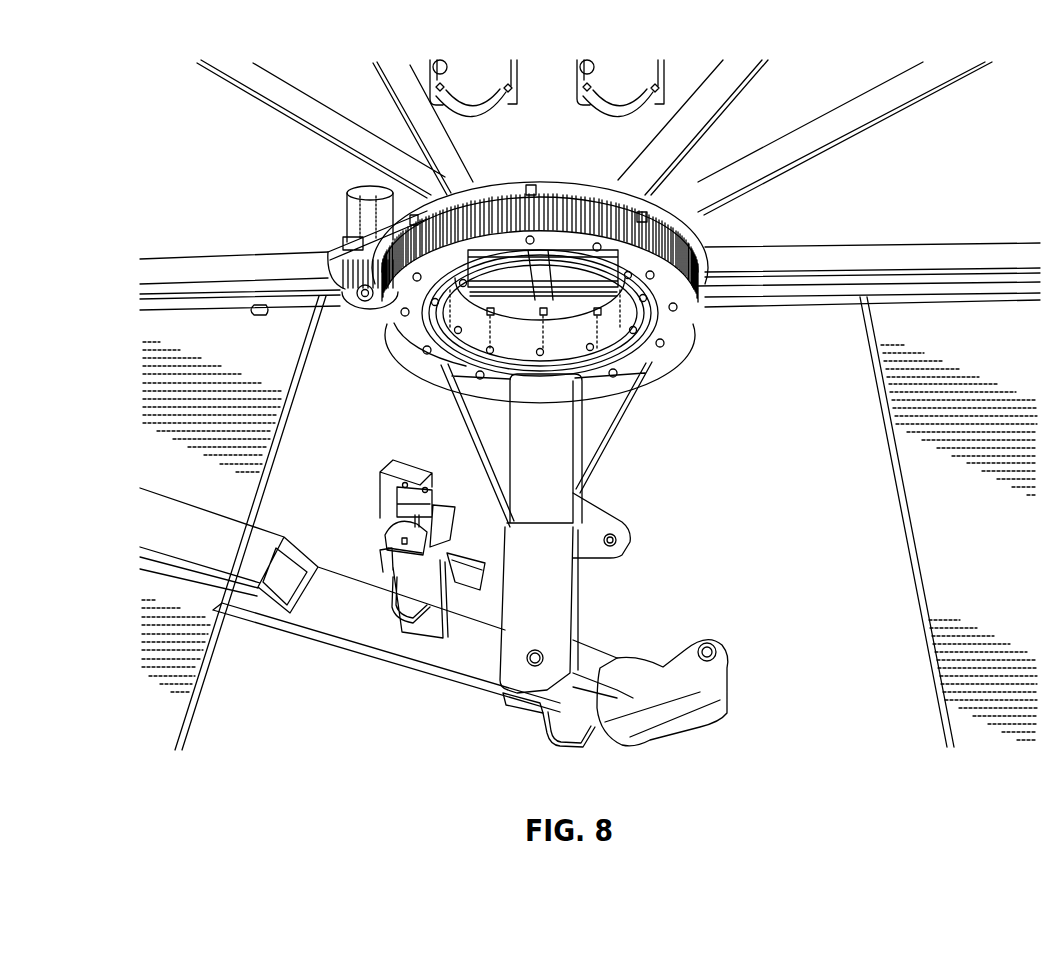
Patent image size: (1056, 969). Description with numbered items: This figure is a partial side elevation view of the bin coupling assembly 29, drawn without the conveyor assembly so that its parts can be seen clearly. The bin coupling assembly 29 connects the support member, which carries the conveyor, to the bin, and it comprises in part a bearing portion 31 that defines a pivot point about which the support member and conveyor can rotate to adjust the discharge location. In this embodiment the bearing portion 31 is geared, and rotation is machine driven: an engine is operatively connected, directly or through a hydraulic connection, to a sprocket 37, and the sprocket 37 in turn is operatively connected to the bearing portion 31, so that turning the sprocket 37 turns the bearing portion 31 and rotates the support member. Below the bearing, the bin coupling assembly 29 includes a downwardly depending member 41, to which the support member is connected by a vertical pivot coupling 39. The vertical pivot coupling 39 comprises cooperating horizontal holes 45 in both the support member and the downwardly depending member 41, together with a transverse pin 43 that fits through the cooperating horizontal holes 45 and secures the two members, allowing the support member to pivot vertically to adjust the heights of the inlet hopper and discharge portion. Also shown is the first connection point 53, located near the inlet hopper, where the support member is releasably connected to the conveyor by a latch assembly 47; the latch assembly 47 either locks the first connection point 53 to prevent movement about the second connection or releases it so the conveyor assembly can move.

The bin coupling assembly 29 is at (520, 182).
The bearing portion 31 is at (653, 250).
The sprocket 37 is at (384, 307).
The downwardly depending member 41 is at (560, 474).
The first connection point 53 is at (403, 472).
The latch assembly 47 is at (393, 533).
The vertical pivot coupling 39 is at (538, 649).
The transverse pin 43 is at (538, 649).
The cooperating horizontal holes 45 is at (538, 649).